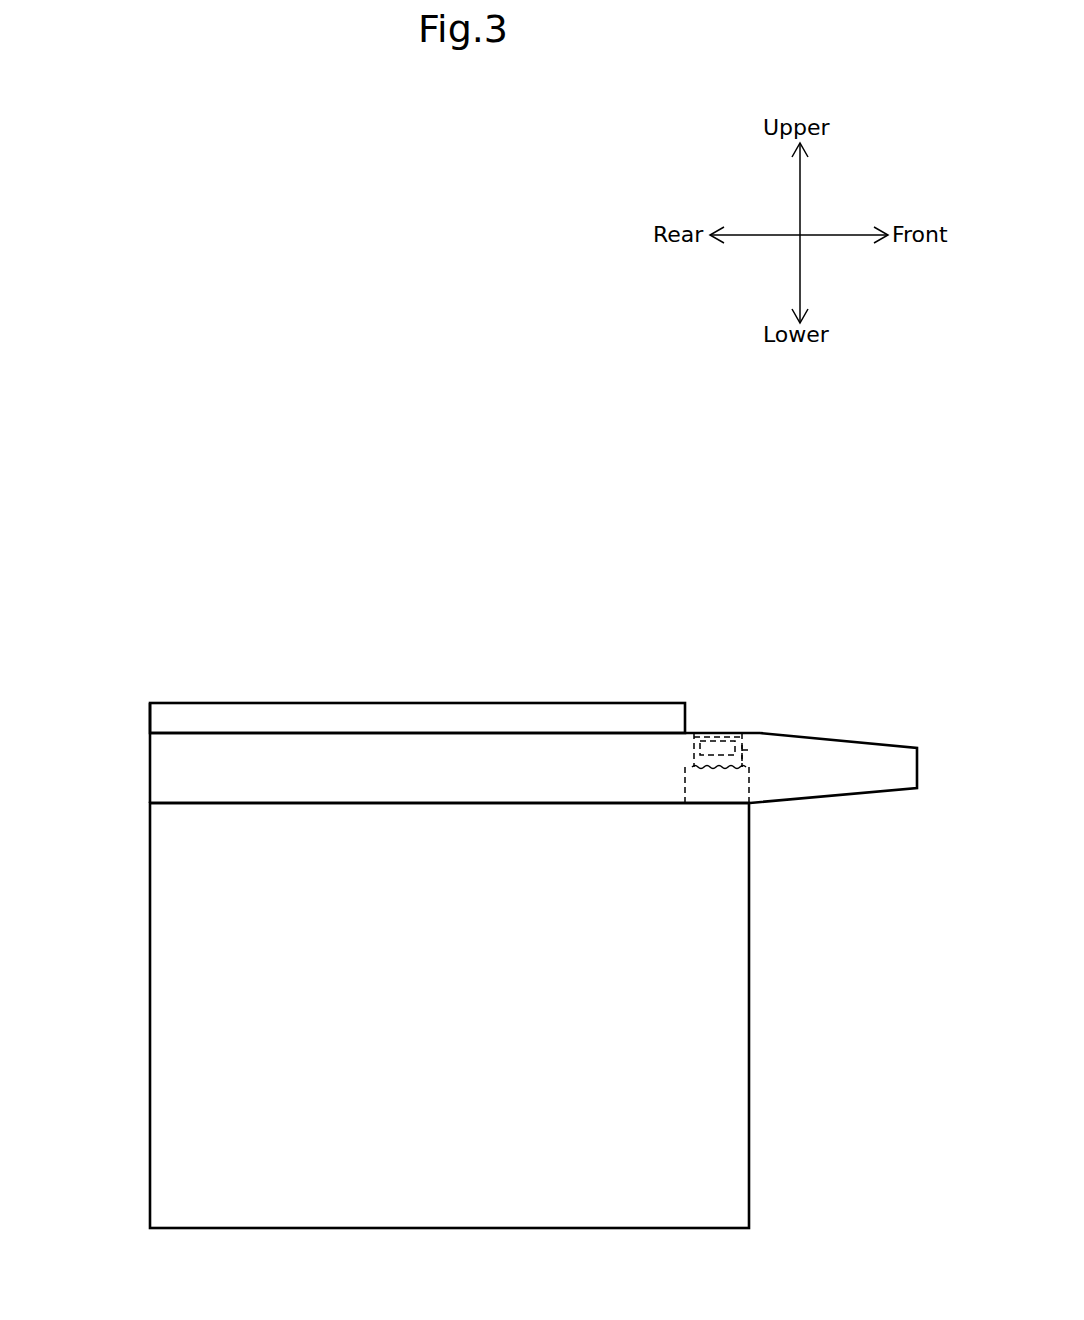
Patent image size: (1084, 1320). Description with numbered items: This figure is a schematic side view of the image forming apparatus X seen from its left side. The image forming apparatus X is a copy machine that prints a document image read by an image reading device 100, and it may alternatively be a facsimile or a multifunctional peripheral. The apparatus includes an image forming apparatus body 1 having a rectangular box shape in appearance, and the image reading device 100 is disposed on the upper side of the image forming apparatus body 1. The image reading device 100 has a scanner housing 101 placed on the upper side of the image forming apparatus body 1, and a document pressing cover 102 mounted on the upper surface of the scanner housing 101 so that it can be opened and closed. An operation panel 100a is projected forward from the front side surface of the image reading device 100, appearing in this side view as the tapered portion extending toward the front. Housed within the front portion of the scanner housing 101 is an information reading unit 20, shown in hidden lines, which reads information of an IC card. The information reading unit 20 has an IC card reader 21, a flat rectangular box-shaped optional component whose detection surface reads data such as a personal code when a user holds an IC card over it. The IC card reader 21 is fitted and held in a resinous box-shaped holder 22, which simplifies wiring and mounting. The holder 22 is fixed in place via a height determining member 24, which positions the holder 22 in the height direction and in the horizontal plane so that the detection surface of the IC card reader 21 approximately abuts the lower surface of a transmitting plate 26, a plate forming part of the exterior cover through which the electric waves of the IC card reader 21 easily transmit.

The image forming apparatus body 1 is at (150, 1018).
The image forming apparatus X is at (245, 558).
The image reading device 100 is at (495, 686).
The operation panel 100a is at (896, 742).
The scanner housing 101 is at (150, 778).
The document pressing cover 102 is at (273, 702).
The information reading unit 20 is at (780, 745).
The IC card reader 21 is at (745, 750).
The holder 22 is at (745, 752).
The height determining member 24 is at (749, 787).
The transmitting plate 26 is at (728, 733).